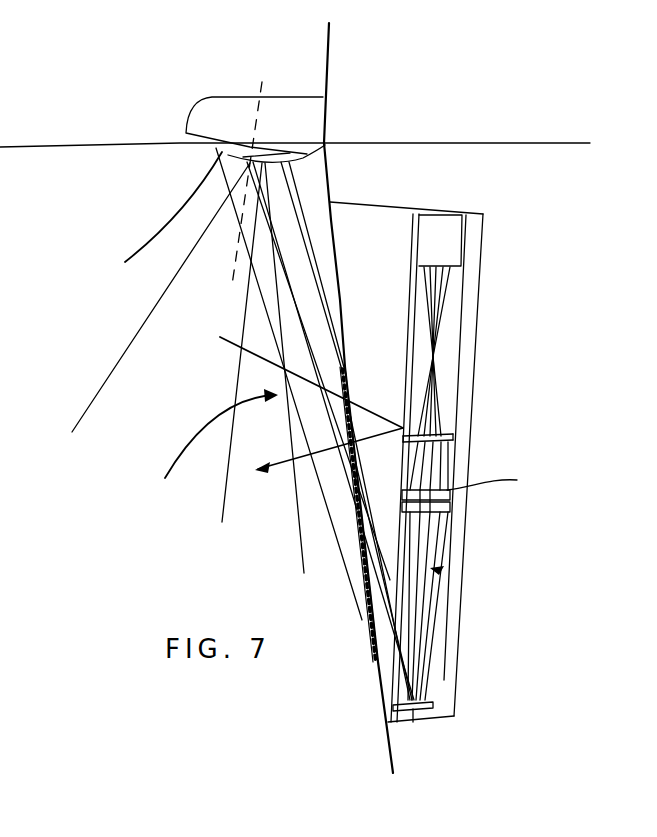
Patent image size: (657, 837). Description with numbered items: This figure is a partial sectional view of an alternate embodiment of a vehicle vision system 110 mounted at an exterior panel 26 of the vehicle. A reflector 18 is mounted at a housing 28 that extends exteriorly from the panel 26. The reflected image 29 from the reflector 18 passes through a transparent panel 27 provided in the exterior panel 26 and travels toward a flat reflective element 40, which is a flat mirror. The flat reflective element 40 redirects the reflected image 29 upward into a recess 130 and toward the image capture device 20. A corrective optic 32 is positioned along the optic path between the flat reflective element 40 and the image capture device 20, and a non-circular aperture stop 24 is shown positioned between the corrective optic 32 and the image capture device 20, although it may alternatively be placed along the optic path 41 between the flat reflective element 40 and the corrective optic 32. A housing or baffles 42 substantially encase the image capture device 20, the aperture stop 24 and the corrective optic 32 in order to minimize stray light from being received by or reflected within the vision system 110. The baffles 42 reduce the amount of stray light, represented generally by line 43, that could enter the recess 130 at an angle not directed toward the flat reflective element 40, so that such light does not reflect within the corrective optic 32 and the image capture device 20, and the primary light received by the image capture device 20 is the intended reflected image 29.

The vehicle vision system 110 is at (46, 93).
The housing 28 is at (232, 110).
The recess 130 is at (377, 226).
The reflector 18 is at (231, 384).
The stray light 43 is at (220, 337).
The reflected image 29 is at (268, 462).
The transparent panel 27 is at (348, 378).
The baffles 42 is at (463, 338).
The image capture device 20 is at (447, 242).
The non-circular aperture stop 24 is at (453, 434).
The corrective optic 32 is at (442, 510).
The optic path 41 is at (432, 569).
The flat reflective element 40 is at (413, 712).
The exterior panel 26 is at (388, 742).